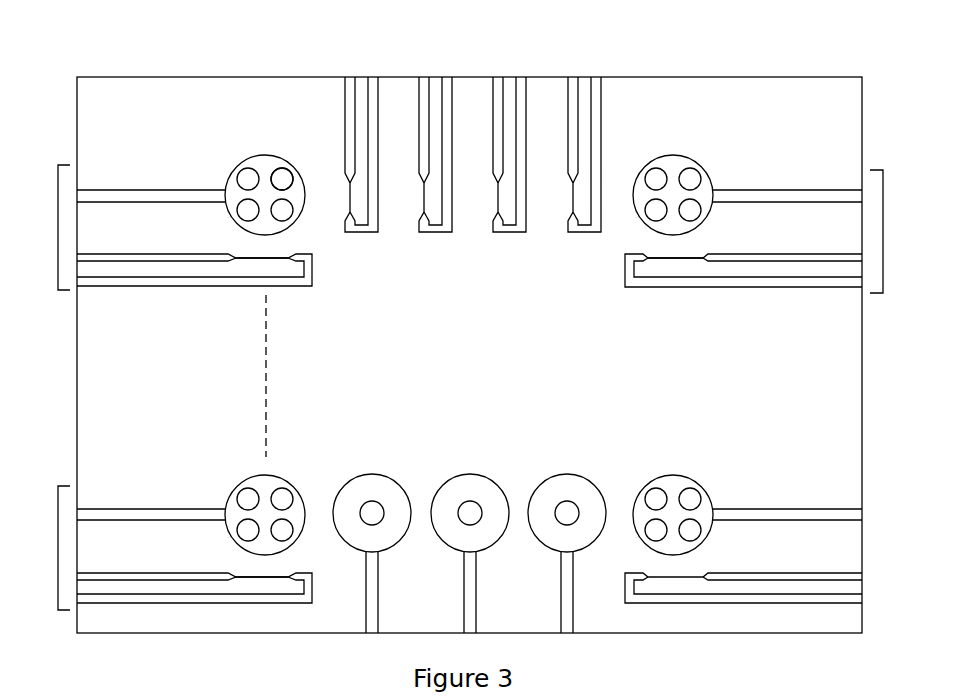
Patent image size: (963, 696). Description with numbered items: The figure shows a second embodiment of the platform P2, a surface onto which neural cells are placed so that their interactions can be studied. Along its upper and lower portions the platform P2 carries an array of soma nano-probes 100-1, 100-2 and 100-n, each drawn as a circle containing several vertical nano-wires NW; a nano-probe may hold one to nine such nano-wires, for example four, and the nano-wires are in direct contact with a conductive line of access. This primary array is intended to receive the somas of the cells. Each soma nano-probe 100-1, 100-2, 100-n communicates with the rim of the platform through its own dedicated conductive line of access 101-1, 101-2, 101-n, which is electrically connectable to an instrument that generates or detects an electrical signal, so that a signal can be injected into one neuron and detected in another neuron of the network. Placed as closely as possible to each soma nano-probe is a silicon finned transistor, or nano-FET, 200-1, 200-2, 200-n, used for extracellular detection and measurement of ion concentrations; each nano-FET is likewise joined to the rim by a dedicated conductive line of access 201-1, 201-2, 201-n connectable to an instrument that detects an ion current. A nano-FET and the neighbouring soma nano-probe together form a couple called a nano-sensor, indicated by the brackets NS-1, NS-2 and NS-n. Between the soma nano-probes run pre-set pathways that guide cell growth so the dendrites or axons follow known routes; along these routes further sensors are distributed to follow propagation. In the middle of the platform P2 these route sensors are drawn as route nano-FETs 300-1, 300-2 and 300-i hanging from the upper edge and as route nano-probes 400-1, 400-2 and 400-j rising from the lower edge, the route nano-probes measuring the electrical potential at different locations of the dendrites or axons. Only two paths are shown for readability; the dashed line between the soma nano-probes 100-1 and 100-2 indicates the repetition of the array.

The platform P2 is at (647, 75).
The nano-sensor NS-1 is at (40, 227).
The nano-sensor NS-2 is at (40, 548).
The nano-sensor NS-n is at (900, 231).
The vertical nano-wire NW is at (282, 178).
The soma nano-probe 100-1 is at (232, 172).
The soma nano-probe 100-2 is at (228, 493).
The soma nano-probe 100-n is at (672, 156).
The conductive line of access 101-1 is at (180, 190).
The conductive line of access 101-2 is at (167, 508).
The conductive line of access 101-n is at (748, 188).
The nano-FET 200-1 is at (250, 258).
The nano-FET 200-2 is at (252, 577).
The nano-FET 200-n is at (672, 257).
The conductive line of access 201-1 is at (152, 254).
The conductive line of access 201-2 is at (152, 573).
The conductive line of access 201-n is at (775, 253).
The route nano-FET 300-1 is at (567, 202).
The route nano-FET 300-2 is at (494, 202).
The route nano-FET 300-i is at (356, 203).
The route nano-probe 400-1 is at (540, 483).
The route nano-probe 400-2 is at (467, 474).
The route nano-probe 400-j is at (368, 474).